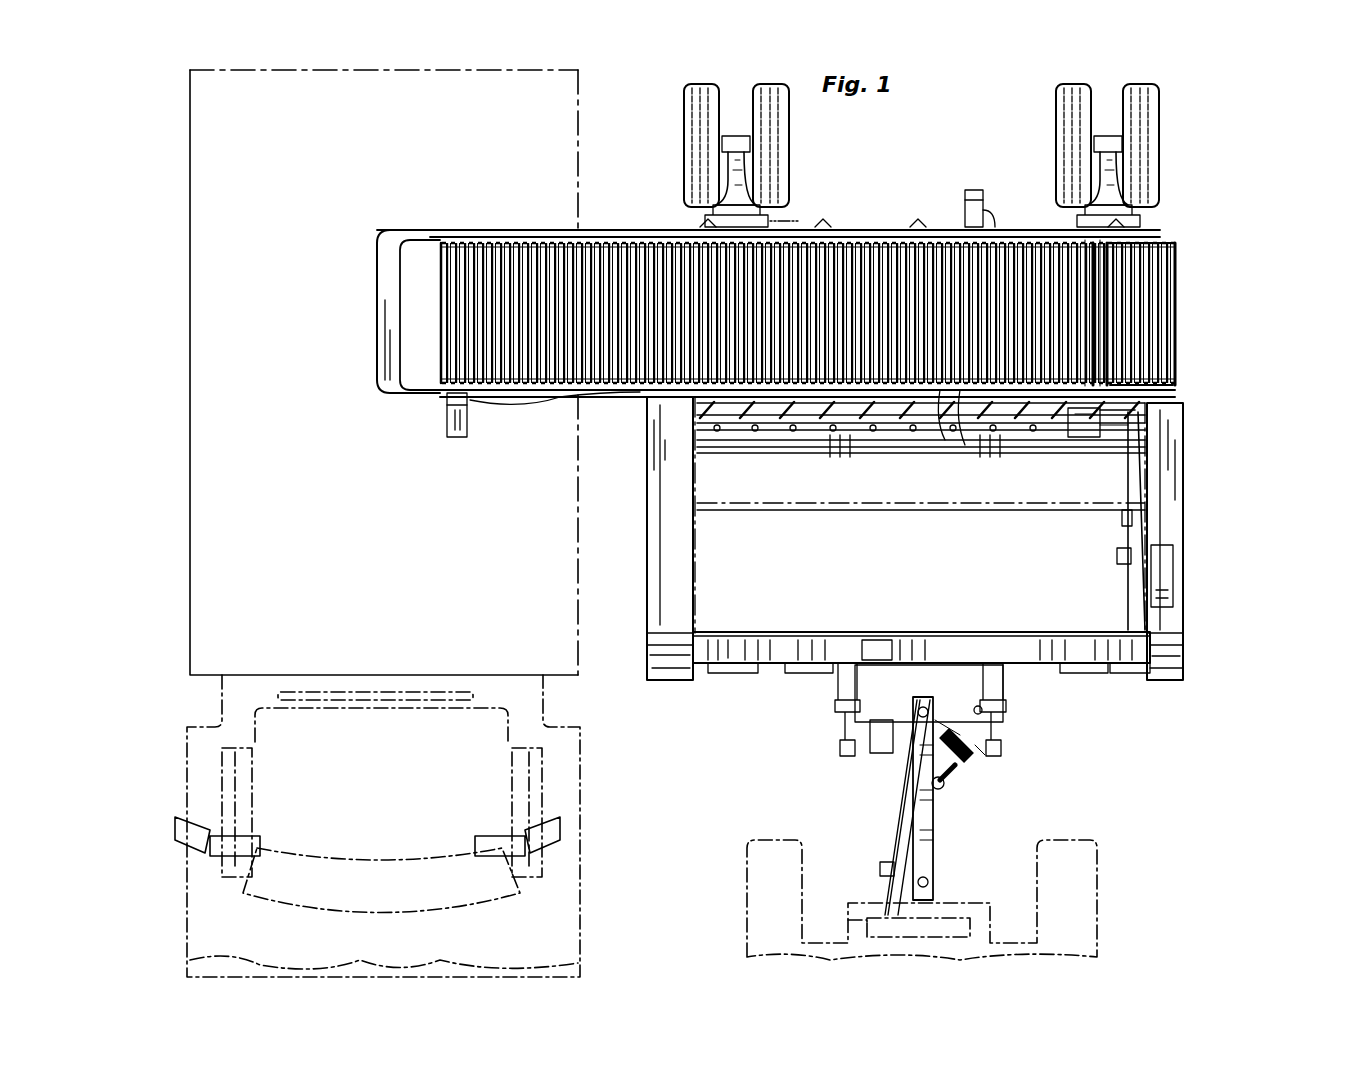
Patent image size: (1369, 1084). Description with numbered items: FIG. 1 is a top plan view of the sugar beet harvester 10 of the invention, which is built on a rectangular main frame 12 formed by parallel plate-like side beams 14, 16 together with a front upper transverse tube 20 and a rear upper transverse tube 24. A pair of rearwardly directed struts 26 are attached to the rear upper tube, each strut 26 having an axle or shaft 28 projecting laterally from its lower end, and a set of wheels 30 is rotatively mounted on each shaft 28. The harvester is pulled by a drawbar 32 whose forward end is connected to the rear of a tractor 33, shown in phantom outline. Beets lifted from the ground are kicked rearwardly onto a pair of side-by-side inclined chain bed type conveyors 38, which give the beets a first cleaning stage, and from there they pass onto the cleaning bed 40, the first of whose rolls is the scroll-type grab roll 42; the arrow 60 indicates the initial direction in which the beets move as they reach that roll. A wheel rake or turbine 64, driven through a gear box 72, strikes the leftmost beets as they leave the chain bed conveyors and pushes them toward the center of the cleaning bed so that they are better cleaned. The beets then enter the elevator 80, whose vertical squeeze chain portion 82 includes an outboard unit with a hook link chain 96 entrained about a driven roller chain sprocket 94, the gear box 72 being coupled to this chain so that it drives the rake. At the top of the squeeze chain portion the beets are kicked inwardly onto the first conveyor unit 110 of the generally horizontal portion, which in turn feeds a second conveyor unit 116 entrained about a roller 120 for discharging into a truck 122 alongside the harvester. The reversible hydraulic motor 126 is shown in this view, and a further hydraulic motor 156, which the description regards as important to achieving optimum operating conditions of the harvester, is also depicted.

The sugar beet harvester 10 is at (1204, 634).
The main frame 12 is at (1185, 426).
The side beam 14 is at (1180, 497).
The side beam 16 is at (650, 530).
The front upper transverse tube 20 is at (775, 658).
The rear upper transverse tube 24 is at (868, 227).
The strut 26 is at (720, 197).
The axle or shaft 28 is at (752, 155).
The wheels 30 is at (772, 82).
The drawbar 32 is at (933, 810).
The tractor 33 is at (745, 882).
The inclined chain bed type conveyor 38 is at (770, 452).
The cleaning bed 40 is at (948, 397).
The scroll-type grab roll 42 is at (830, 412).
The arrow 60 is at (984, 412).
The wheel rake or turbine 64 is at (1142, 368).
The gear box 72 is at (1090, 430).
The elevator 80 is at (1183, 275).
The vertical squeeze chain portion 82 is at (1180, 302).
The driven roller chain sprocket 94 is at (1155, 245).
The hook link chain 96 is at (1150, 330).
The first conveyor unit 110 is at (918, 281).
The second conveyor unit 116 is at (549, 273).
The roller 120 is at (440, 258).
The truck 122 is at (215, 700).
The reversible hydraulic motor 126 is at (460, 437).
The hydraulic motor 156 is at (975, 190).